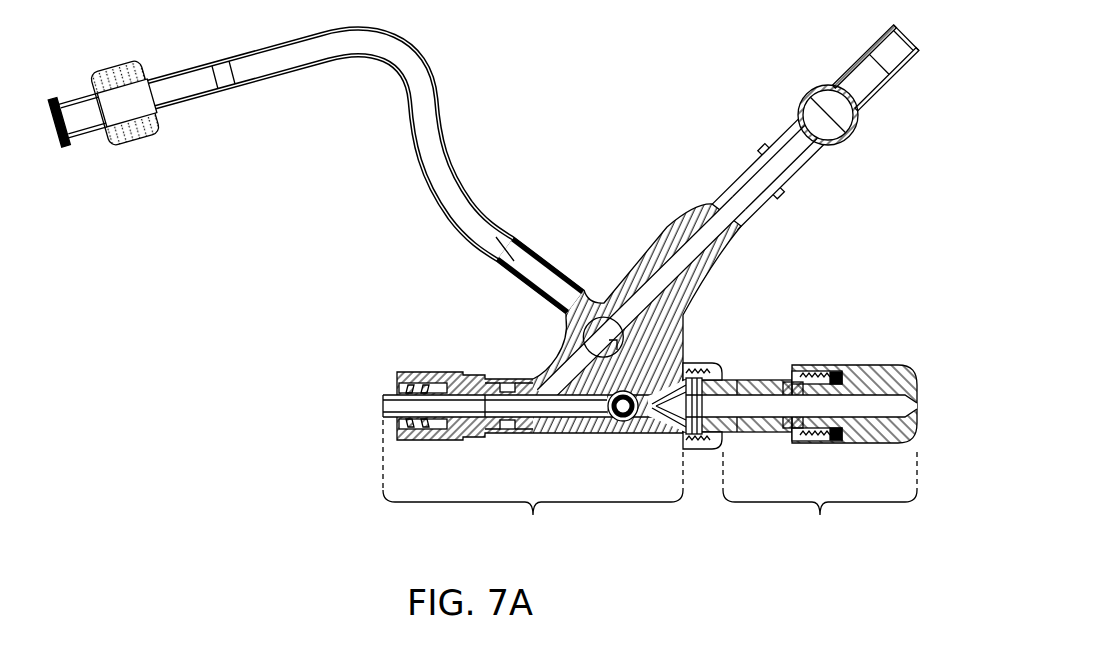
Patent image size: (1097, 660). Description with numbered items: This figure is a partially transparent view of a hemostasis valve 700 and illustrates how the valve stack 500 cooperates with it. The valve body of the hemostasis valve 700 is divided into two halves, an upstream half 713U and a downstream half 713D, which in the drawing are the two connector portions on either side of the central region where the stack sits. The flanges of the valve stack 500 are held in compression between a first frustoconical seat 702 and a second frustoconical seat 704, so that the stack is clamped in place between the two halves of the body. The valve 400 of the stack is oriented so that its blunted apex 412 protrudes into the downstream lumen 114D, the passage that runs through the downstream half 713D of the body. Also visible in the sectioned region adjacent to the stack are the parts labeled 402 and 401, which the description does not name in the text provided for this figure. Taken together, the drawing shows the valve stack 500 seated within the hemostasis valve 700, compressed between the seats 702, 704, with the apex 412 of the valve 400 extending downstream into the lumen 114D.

The hemostasis valve 700 is at (217, 246).
The valve 400 is at (534, 378).
The seal 402 is at (702, 366).
The tubular extension 401 is at (740, 378).
The downstream lumen 114D is at (598, 418).
The blunted apex 412 is at (672, 422).
The first frustoconical seat 702 is at (668, 428).
The second frustoconical seat 704 is at (733, 431).
The valve stack 500 is at (703, 450).
The downstream half 713D is at (533, 462).
The upstream half 713U is at (820, 458).